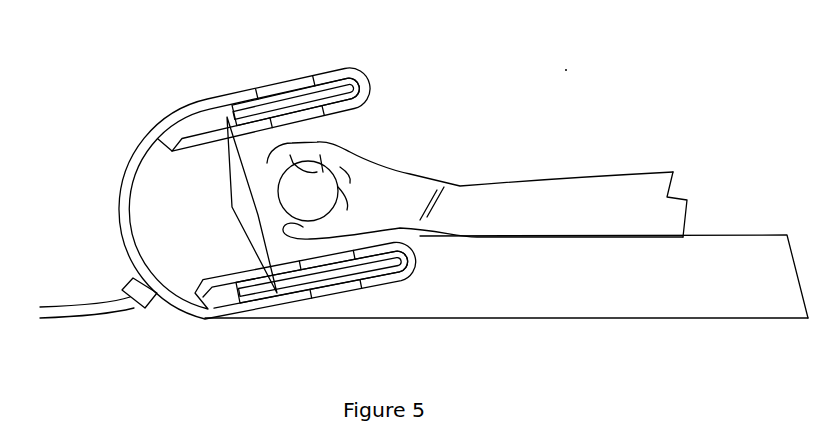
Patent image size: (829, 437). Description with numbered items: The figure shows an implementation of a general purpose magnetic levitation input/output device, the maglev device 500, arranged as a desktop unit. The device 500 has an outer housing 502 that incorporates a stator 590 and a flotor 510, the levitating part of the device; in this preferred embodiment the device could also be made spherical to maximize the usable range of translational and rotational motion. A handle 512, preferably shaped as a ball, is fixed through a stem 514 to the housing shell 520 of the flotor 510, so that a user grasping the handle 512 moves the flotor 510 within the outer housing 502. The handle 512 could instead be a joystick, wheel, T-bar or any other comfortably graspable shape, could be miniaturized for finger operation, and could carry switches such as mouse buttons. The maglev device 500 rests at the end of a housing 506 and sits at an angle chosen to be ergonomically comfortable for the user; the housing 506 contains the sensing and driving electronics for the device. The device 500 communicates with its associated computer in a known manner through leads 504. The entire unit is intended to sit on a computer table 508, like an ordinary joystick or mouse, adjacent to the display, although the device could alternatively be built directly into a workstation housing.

The maglev device 500 is at (115, 213).
The outer housing 502 is at (160, 122).
The leads 504 is at (136, 310).
The housing 506 is at (738, 288).
The computer table 508 is at (710, 348).
The flotor 510 is at (337, 80).
The handle 512 is at (348, 154).
The stem 514 is at (252, 234).
The housing shell 520 is at (225, 203).
The stator 590 is at (258, 94).